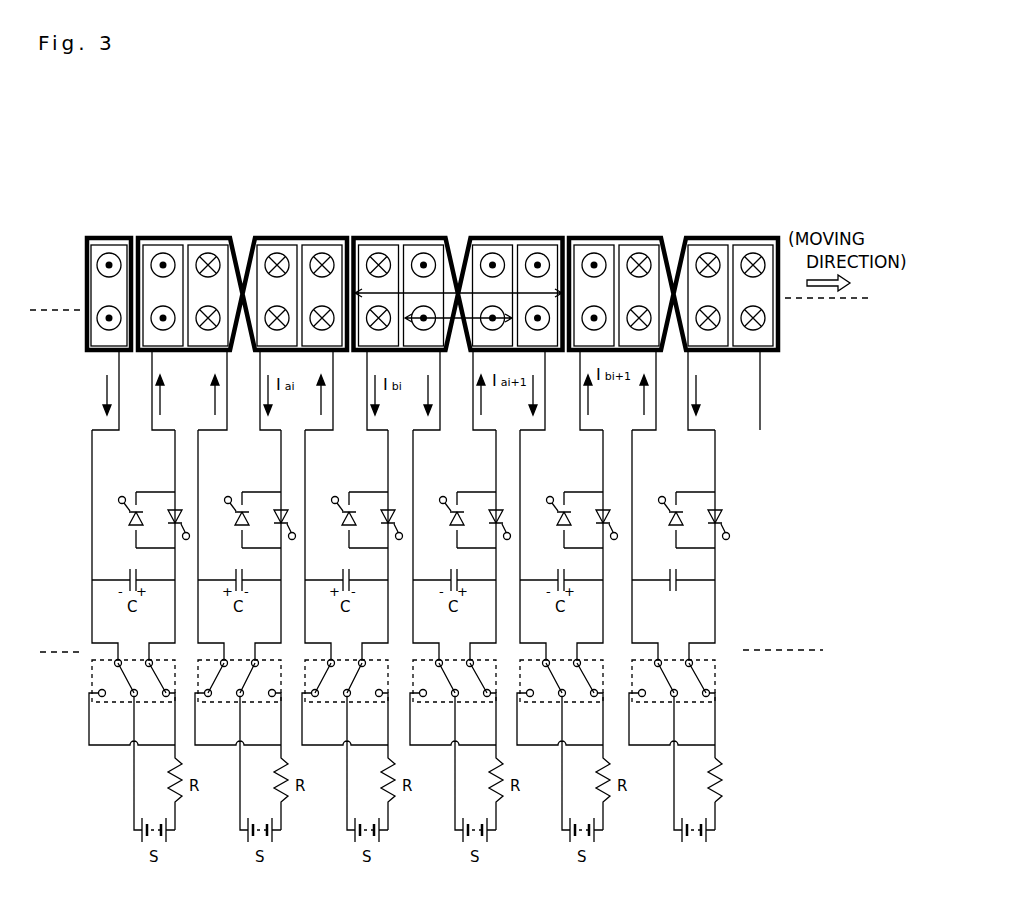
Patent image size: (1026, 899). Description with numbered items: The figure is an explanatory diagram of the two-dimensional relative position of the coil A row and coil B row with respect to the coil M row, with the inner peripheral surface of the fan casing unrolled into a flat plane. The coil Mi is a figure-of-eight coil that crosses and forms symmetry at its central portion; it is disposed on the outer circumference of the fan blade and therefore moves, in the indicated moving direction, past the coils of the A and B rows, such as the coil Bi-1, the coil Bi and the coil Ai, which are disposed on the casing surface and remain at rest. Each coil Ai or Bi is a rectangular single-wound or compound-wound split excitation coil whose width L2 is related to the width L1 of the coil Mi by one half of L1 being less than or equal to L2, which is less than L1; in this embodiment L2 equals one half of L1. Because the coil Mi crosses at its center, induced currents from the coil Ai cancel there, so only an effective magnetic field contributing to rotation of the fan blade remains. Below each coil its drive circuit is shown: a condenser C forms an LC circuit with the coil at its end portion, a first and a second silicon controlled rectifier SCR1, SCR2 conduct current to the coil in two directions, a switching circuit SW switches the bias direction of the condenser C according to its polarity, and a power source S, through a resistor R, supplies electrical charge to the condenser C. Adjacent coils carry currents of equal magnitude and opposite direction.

The coil M_i Mi is at (240, 238).
The coil B_i-1 Bi-1 is at (147, 238).
The coil B_i Bi is at (359, 238).
The coil A_i Ai is at (243, 238).
The width length of coil M_i L1 is at (458, 287).
The width length of coil A_i or coil B_i L2 is at (458, 312).
The first silicon controlled rectifier SCR1 is at (751, 529).
The second silicon controlled rectifier SCR2 is at (718, 484).
The condenser C is at (700, 600).
The switching circuit SW is at (699, 696).
The resistor R is at (735, 794).
The power source S is at (683, 847).